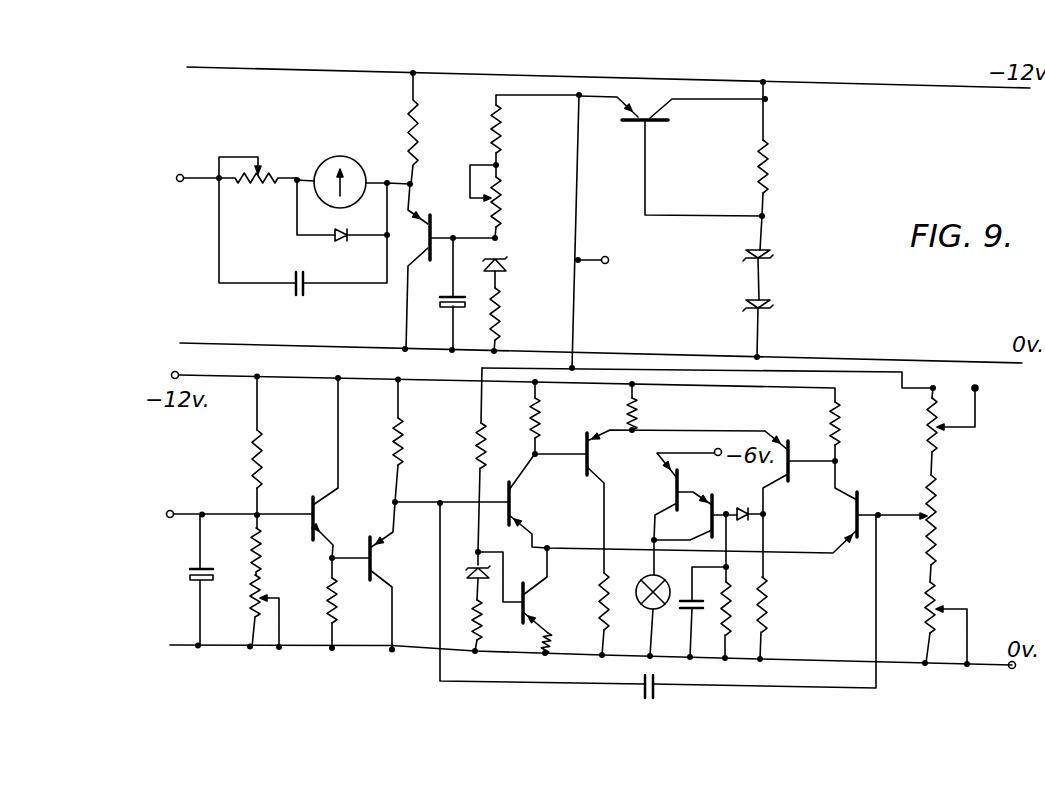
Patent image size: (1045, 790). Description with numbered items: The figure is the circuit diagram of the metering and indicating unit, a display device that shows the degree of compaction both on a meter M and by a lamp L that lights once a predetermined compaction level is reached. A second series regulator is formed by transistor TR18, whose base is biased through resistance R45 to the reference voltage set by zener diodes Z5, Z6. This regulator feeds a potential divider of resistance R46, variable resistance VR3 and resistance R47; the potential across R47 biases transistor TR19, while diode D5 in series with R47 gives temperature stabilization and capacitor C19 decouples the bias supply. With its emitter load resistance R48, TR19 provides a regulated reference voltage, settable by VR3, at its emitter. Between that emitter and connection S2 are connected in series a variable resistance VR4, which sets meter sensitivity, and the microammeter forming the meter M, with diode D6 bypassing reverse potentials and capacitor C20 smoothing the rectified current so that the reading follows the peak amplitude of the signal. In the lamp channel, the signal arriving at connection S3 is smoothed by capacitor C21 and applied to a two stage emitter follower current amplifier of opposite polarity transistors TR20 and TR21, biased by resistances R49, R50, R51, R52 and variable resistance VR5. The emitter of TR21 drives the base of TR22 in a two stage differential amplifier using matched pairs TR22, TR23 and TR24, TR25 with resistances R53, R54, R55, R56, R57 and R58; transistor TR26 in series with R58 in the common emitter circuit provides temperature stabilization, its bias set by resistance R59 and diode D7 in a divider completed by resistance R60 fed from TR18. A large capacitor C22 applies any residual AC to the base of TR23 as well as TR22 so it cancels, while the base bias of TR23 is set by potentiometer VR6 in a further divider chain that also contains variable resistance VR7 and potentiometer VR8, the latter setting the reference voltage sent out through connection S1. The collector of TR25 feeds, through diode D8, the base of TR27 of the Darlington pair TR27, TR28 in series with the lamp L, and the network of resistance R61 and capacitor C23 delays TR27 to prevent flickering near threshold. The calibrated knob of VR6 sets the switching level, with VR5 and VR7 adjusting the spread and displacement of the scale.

The connection S2 is at (180, 181).
The variable resistance VR4 is at (258, 186).
The meter M is at (378, 146).
The diode D6 is at (347, 252).
The capacitor C20 is at (306, 298).
The emitter load resistance R48 is at (439, 128).
The transistor TR19 is at (454, 236).
The capacitor C19 is at (439, 294).
The resistance R46 is at (523, 129).
The variable resistance VR3 is at (513, 196).
The diode D5 is at (516, 269).
The resistance R47 is at (520, 314).
The transistor TR18 is at (679, 118).
The resistance R45 is at (789, 166).
The zener diode Z5 is at (781, 259).
The zener diode Z6 is at (782, 310).
The connection S1 is at (796, 339).
The connection S3 is at (149, 517).
The capacitor C21 is at (185, 590).
The resistance R49 is at (281, 459).
The resistance R50 is at (280, 551).
The variable resistance VR5 is at (278, 594).
The transistor TR20 is at (347, 518).
The transistor TR21 is at (405, 558).
The resistance R51 is at (358, 600).
The resistance R52 is at (423, 441).
The resistance R60 is at (507, 445).
The diode D7 is at (468, 585).
The resistance R59 is at (499, 623).
The transistor TR26 is at (557, 603).
The resistance R58 is at (571, 644).
The transistor TR22 is at (544, 504).
The resistance R53 is at (560, 418).
The transistor TR24 is at (620, 454).
The resistance R54 is at (658, 414).
The resistance R57 is at (584, 599).
The signal lamp L is at (651, 580).
The capacitor C23 is at (681, 627).
The resistance R61 is at (745, 621).
The transistor TR28 is at (650, 486).
The transistor TR27 is at (711, 494).
The diode D8 is at (748, 499).
The transistor TR25 is at (789, 440).
The resistance R55 is at (862, 423).
The resistance R56 is at (786, 604).
The transistor TR23 is at (835, 517).
The potentiometer VR8 is at (961, 430).
The potentiometer VR6 is at (953, 520).
The variable resistance VR7 is at (956, 607).
The capacitor C22 is at (628, 680).